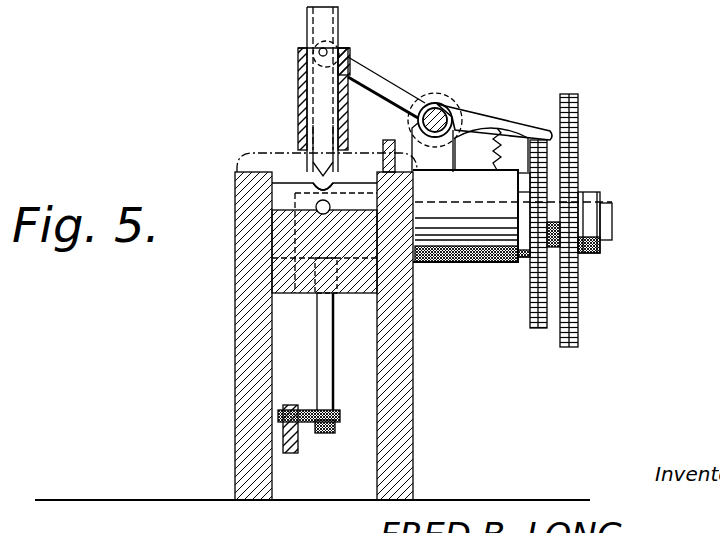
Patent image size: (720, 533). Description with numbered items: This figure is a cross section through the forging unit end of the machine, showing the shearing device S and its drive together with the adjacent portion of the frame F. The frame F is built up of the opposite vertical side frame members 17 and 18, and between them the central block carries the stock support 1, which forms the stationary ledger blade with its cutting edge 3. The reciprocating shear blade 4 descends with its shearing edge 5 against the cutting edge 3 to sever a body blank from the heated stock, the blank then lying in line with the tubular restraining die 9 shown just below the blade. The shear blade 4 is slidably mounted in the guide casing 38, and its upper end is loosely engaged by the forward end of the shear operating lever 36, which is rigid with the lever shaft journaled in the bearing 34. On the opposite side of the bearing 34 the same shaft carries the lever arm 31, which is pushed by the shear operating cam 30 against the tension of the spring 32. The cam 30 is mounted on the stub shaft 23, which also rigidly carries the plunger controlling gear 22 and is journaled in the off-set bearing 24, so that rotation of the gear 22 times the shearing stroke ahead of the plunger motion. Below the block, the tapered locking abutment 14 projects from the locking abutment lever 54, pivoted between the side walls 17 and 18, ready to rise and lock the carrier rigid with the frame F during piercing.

The shearing device S is at (310, 89).
The machine frame F is at (351, 320).
The stock support 1 is at (292, 186).
The cutting edge 3 is at (333, 186).
The shear blade 4 is at (323, 170).
The shearing edge 5 is at (314, 172).
The tubular restraining die 9 is at (330, 203).
The locking abutment 14 is at (326, 350).
The side frame member 17 is at (412, 372).
The side frame member 18 is at (228, 336).
The plunger controlling gear 22 is at (582, 140).
The stub shaft 23 is at (612, 222).
The off-set bearing 24 is at (513, 219).
The shear operating cam 30 is at (533, 293).
The lever arm 31 is at (513, 118).
The spring 32 is at (491, 150).
The bearing 34 is at (447, 110).
The shear operating lever 36 is at (385, 78).
The guide casing 38 is at (410, 122).
The locking abutment lever 54 is at (297, 404).